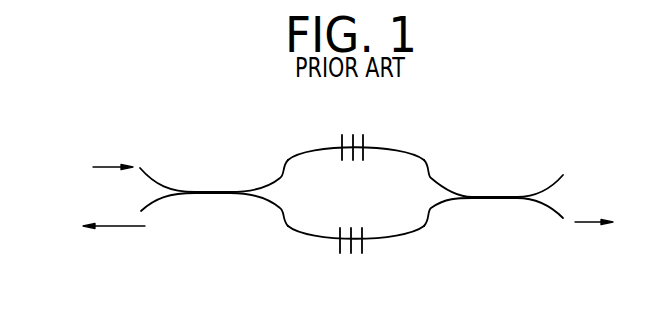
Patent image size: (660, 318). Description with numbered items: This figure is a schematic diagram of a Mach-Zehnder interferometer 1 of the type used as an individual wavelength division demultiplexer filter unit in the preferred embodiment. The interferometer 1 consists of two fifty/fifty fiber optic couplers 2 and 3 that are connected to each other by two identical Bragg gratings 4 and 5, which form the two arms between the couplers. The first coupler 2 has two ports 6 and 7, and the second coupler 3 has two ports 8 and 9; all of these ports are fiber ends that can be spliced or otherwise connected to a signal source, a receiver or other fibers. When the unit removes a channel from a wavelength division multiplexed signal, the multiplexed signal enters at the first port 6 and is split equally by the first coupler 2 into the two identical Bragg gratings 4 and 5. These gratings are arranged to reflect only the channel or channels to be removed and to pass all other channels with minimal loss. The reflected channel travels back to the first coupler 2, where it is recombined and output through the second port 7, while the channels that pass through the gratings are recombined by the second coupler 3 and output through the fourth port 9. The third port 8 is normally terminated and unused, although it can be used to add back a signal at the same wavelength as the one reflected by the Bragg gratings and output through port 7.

The Mach-Zehnder interferometer 1 is at (255, 245).
The first 50/50 fiber optic coupler 2 is at (227, 165).
The second 50/50 fiber optic coupler 3 is at (492, 215).
The first Bragg grating 4 is at (350, 128).
The second Bragg grating 5 is at (348, 262).
The first port 6 is at (140, 168).
The second port 7 is at (141, 211).
The third port 8 is at (563, 175).
The fourth port 9 is at (563, 218).